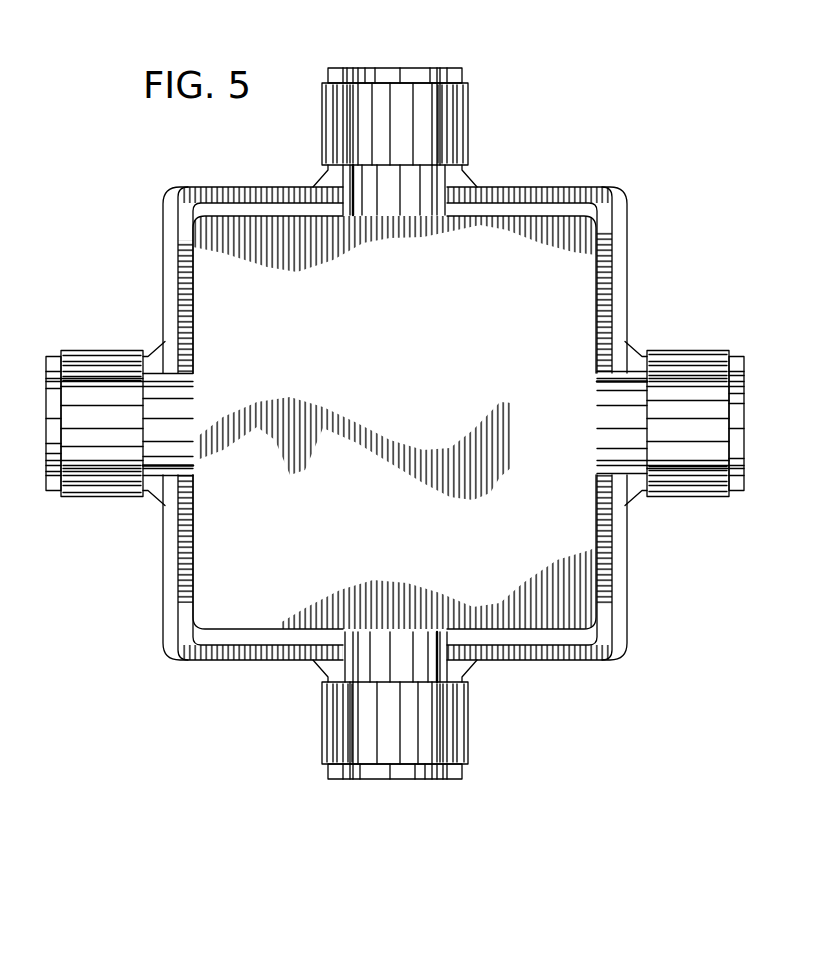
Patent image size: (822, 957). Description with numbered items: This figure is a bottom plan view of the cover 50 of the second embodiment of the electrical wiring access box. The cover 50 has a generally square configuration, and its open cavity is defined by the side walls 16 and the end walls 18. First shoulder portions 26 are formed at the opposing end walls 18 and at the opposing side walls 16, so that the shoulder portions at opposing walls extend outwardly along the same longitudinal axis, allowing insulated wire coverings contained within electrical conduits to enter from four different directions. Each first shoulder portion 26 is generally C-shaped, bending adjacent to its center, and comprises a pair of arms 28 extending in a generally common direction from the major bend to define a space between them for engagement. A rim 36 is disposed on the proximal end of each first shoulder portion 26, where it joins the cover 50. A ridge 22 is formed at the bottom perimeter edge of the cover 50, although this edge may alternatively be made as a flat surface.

The side walls 16 is at (160, 233).
The end walls 18 is at (195, 663).
The ridge 22 is at (180, 600).
The first shoulder portions 26 is at (463, 133).
The arms 28 is at (345, 103).
The rim 36 is at (327, 178).
The cover 50 is at (641, 171).